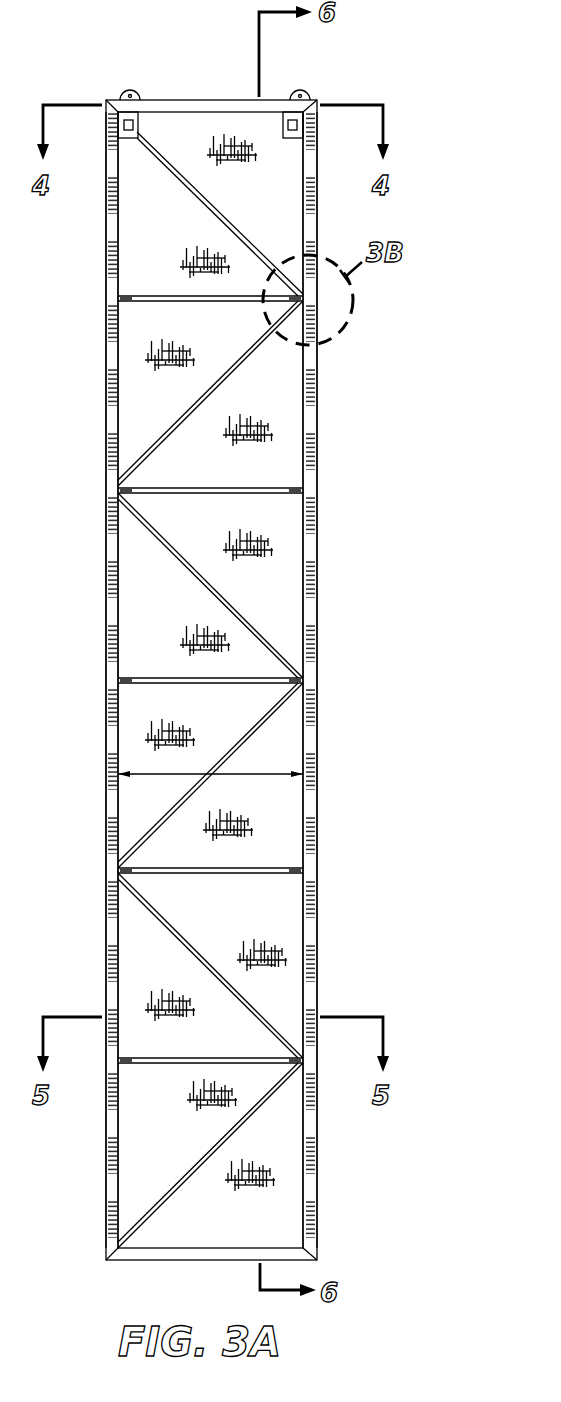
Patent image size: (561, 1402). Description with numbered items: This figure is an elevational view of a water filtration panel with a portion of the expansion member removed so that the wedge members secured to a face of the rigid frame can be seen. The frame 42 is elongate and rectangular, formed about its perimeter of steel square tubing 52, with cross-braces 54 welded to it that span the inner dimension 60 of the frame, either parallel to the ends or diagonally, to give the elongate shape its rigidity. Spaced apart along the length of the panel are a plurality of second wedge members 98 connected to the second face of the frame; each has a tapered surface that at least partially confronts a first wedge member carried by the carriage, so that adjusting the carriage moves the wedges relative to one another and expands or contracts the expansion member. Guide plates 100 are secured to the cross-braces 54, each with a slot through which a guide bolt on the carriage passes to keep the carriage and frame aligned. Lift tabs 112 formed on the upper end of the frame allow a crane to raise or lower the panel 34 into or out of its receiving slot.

The truss panel 34 is at (213, 647).
The frame 42 is at (232, 647).
The steel square tubing 52 is at (213, 680).
The cross-braces 54 is at (187, 566).
The inner dimension 60 is at (148, 778).
The second wedge member 98 is at (108, 253).
The guide plate 100 is at (138, 296).
The lift tabs 112 is at (132, 96).